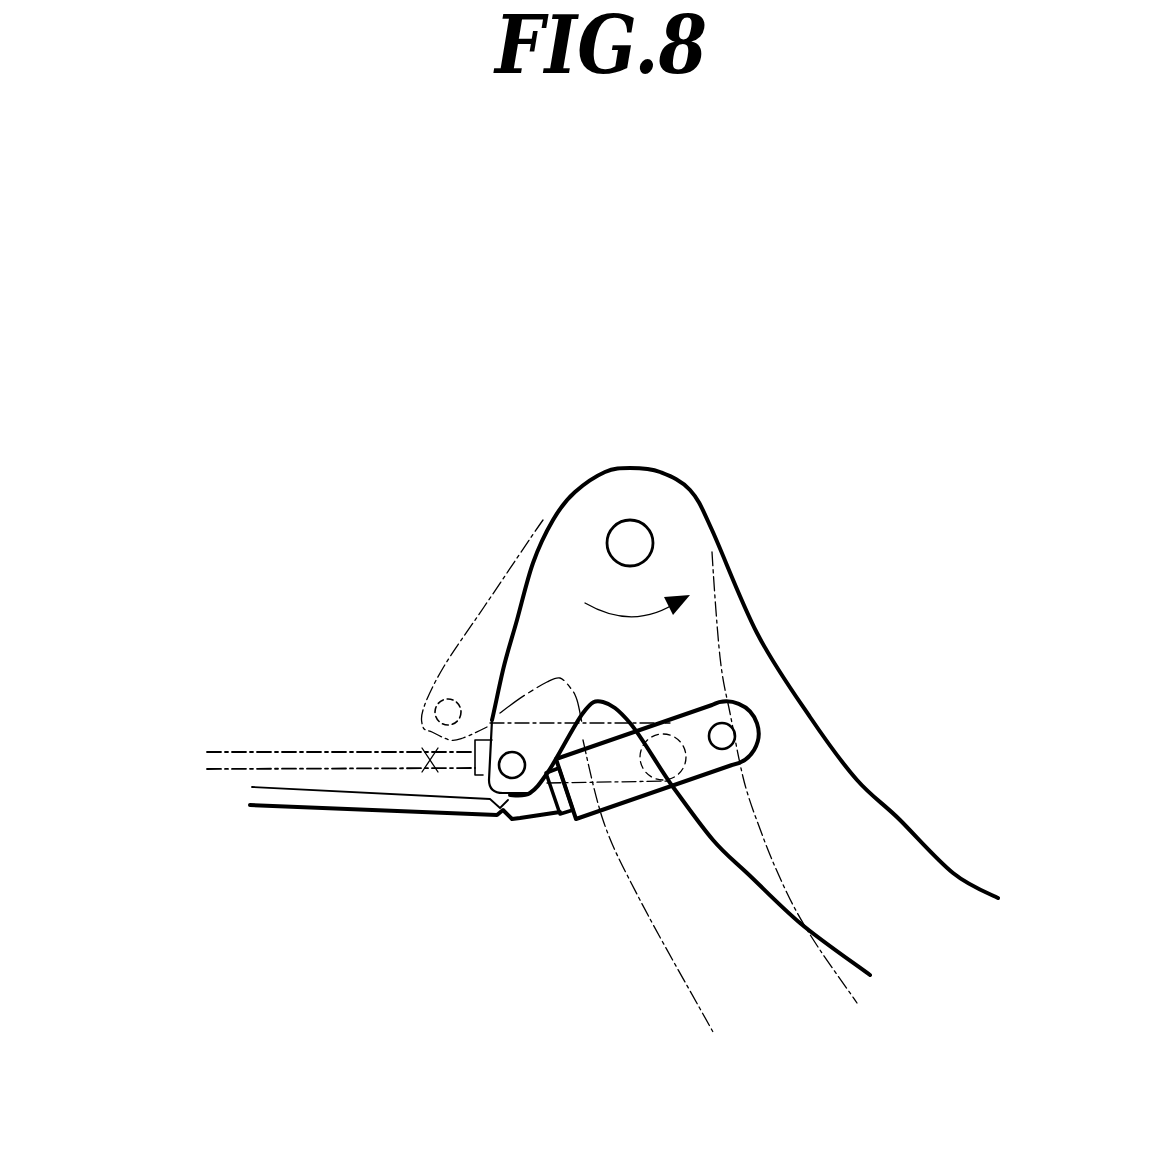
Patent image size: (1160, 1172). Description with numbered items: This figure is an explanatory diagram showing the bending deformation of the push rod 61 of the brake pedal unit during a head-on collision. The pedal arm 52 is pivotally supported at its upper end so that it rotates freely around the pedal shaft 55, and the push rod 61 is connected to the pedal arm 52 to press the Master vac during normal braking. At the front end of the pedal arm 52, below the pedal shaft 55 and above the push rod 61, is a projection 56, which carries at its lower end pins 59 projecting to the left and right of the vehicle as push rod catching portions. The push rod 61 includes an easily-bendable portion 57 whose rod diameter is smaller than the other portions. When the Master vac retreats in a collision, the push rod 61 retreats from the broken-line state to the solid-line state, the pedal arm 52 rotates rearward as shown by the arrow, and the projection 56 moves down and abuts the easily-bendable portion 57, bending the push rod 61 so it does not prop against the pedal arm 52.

The pedal arm 52 is at (857, 778).
The pedal shaft 55 is at (633, 522).
The projection 56 is at (427, 730).
The easily-bendable portion 57 is at (507, 817).
The pins 59 is at (513, 752).
The push rod 61 is at (313, 802).